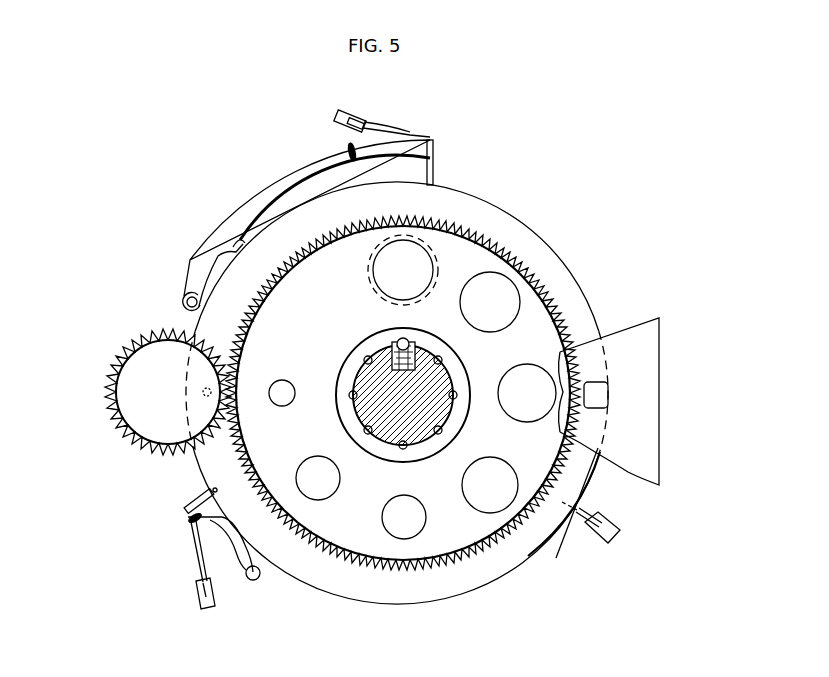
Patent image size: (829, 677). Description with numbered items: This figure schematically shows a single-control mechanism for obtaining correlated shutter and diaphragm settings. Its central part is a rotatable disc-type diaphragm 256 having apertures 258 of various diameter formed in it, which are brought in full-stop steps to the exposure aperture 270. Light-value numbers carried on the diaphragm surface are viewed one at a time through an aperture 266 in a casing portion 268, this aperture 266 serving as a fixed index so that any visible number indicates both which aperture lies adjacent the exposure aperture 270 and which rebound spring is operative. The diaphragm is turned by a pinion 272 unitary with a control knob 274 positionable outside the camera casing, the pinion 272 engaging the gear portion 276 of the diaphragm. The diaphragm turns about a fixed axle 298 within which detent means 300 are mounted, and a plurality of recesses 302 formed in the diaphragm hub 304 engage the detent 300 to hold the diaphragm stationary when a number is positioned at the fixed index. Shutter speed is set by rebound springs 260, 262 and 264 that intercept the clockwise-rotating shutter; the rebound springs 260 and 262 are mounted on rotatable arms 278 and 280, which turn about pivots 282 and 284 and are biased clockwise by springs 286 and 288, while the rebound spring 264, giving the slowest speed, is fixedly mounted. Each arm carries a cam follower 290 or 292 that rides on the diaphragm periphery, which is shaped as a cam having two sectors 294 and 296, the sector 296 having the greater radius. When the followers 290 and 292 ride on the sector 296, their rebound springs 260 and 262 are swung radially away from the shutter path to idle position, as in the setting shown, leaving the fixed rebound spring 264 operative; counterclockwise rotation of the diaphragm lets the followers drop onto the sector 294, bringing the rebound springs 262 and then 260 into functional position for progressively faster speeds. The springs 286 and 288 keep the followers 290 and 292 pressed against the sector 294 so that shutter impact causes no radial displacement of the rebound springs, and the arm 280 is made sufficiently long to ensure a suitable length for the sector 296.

The disc-type diaphragm 256 is at (428, 548).
The apertures 258 is at (338, 451).
The rebound spring 260 is at (205, 496).
The rebound spring 262 is at (432, 172).
The rebound spring 264 is at (571, 532).
The aperture 266 is at (600, 395).
The casing portion 268 is at (652, 447).
The exposure aperture 270 is at (372, 275).
The pinion 272 is at (118, 428).
The control knob 274 is at (135, 355).
The gear portion 276 is at (333, 562).
The rotatable arm 278 is at (188, 521).
The rotatable arm 280 is at (316, 166).
The pivot 282 is at (253, 580).
The pivot 284 is at (187, 300).
The spring 286 is at (196, 562).
The spring 288 is at (378, 133).
The cam follower 290 is at (190, 535).
The cam follower 292 is at (233, 247).
The cam sector 294 is at (280, 220).
The cam sector 296 is at (237, 253).
The fixed axle 298 is at (388, 428).
The detent means 300 is at (405, 342).
The recesses 302 is at (440, 361).
The diaphragm hub 304 is at (453, 420).